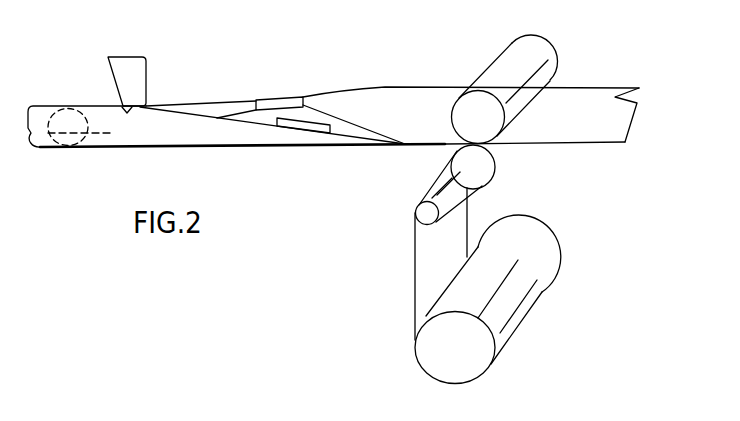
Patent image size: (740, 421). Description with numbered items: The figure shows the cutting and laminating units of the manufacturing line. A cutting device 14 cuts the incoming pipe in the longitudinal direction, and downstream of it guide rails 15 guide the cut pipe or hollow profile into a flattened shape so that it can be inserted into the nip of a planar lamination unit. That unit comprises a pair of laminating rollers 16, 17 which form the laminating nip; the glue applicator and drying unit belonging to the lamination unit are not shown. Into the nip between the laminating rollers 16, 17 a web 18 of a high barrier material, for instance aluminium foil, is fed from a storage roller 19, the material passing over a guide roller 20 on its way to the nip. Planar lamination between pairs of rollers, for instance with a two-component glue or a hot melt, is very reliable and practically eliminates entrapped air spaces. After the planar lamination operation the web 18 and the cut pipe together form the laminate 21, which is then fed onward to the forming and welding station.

The cutting device 14 is at (128, 63).
The guide rails 15 is at (272, 103).
The laminating roller 16 is at (466, 115).
The laminating roller 17 is at (488, 178).
The web 18 is at (414, 271).
The storage roller 19 is at (480, 358).
The guide roller 20 is at (423, 215).
The laminate 21 is at (572, 128).